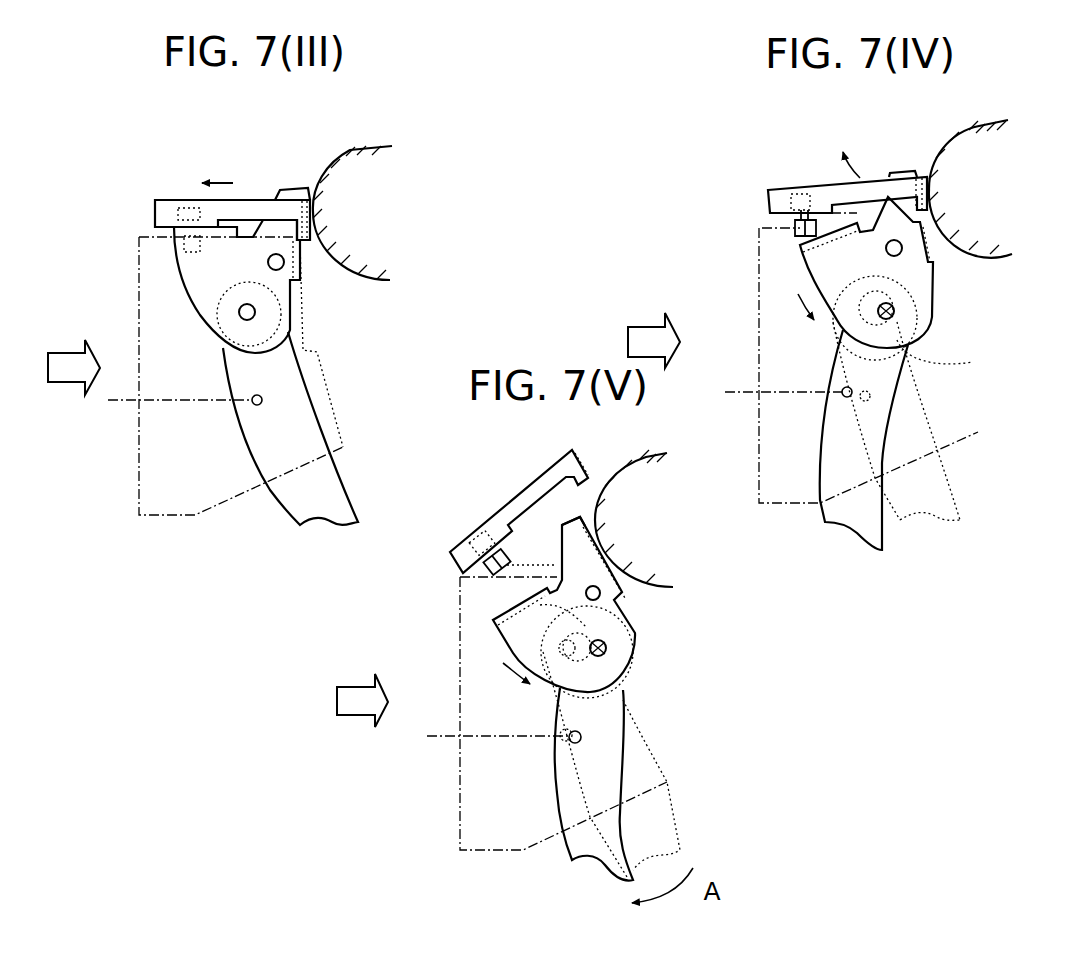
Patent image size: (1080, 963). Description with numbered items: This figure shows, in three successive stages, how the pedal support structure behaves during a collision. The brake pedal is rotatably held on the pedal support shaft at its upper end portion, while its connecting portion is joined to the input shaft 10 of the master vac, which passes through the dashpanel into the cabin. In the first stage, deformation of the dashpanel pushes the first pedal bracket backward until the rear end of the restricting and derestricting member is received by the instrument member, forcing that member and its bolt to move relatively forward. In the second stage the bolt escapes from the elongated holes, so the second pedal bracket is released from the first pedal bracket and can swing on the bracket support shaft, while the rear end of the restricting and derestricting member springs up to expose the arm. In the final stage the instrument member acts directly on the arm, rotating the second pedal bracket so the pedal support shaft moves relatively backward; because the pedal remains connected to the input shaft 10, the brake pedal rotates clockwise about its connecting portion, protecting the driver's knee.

The input shaft 10 is at (177, 402).